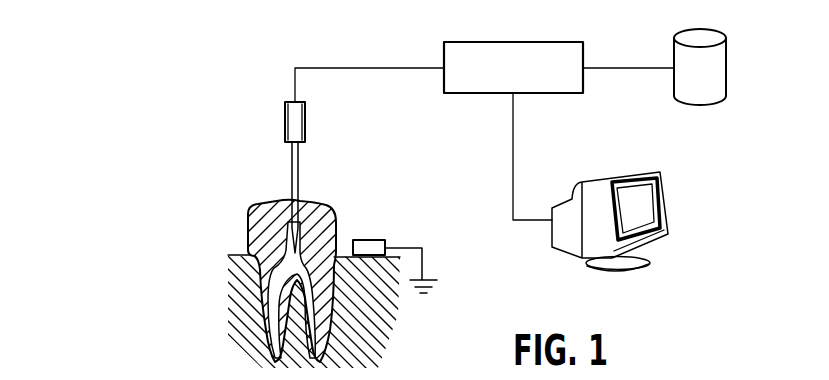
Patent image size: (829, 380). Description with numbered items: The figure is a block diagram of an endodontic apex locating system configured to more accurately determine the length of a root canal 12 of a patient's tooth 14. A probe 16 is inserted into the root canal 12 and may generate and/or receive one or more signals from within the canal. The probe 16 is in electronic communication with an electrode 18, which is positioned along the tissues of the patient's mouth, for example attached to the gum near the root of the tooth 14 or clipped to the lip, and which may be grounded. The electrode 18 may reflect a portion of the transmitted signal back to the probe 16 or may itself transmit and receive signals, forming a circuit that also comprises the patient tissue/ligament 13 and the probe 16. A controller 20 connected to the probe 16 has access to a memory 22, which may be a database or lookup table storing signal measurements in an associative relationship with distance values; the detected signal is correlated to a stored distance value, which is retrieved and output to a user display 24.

The root canal 12 is at (274, 224).
The patient tissue/ligament 13 is at (360, 330).
The tooth 14 is at (248, 230).
The probe 16 is at (285, 116).
The electrode 18 is at (376, 241).
The controller 20 is at (560, 42).
The memory 22 is at (722, 30).
The user display 24 is at (648, 173).